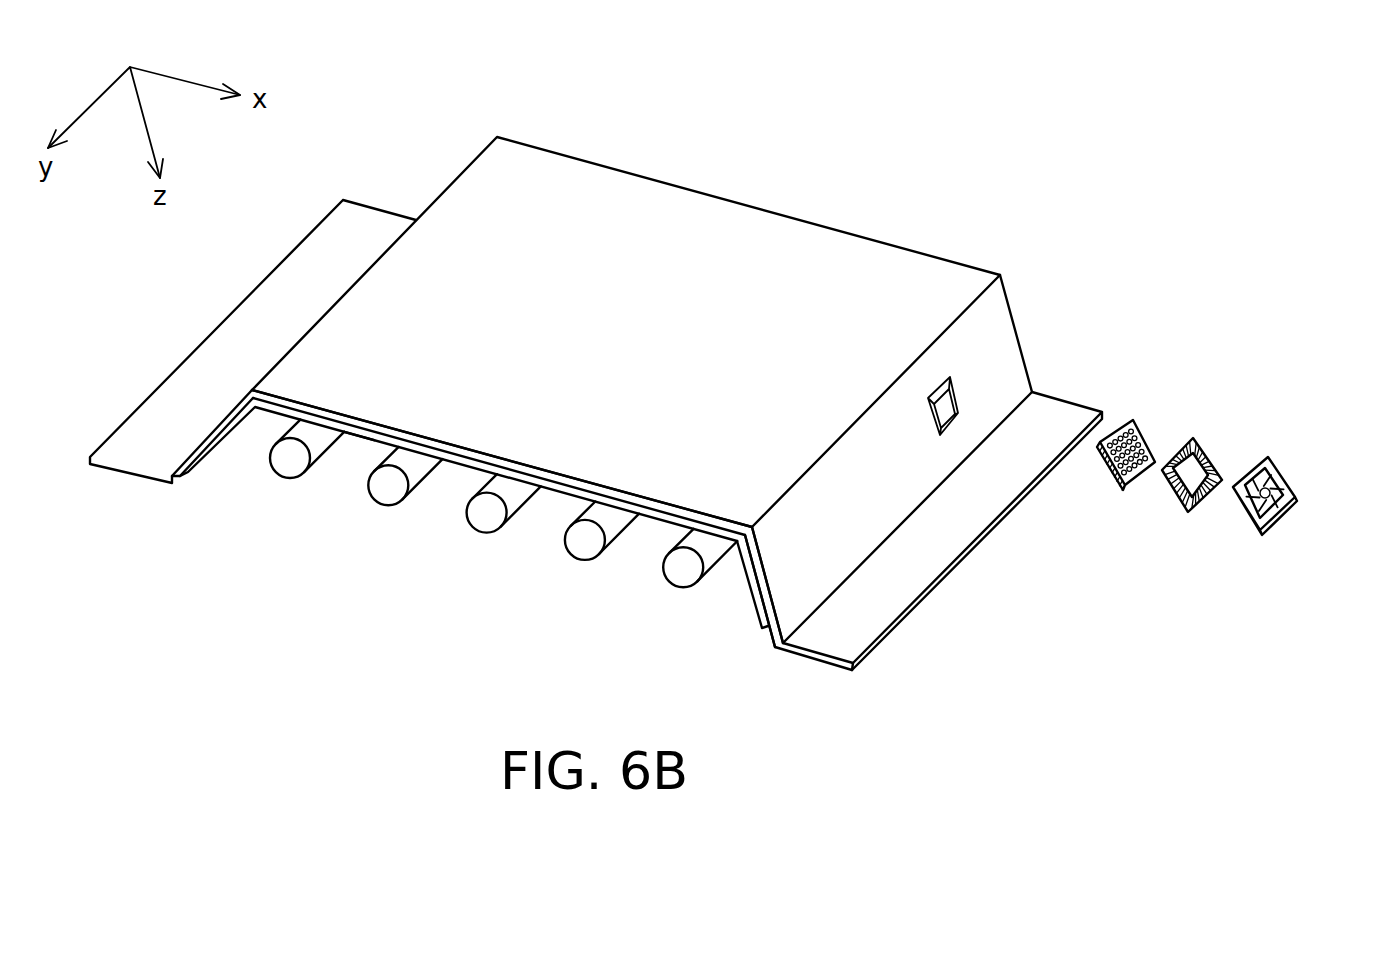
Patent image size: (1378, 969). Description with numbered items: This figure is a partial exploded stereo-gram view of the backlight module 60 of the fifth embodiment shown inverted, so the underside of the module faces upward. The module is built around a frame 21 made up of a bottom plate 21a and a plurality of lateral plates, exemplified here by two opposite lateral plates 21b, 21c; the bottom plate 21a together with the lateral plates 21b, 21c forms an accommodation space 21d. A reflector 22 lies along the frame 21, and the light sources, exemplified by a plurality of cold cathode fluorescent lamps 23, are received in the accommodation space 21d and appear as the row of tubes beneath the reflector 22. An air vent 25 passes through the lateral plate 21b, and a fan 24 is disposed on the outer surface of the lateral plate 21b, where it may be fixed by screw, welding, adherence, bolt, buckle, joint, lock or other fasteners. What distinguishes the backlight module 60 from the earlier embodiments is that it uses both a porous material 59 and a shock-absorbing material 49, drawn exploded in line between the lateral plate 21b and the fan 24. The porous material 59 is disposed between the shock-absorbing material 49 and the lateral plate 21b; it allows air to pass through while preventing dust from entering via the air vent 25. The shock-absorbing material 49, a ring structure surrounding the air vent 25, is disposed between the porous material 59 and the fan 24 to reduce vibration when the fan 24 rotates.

The backlight module 60 is at (1188, 124).
The frame 21 is at (960, 581).
The bottom plate 21a is at (486, 452).
The lateral plate 21b is at (762, 587).
The lateral plate 21c is at (203, 440).
The accommodation space 21d is at (345, 480).
The reflector 22 is at (455, 457).
The cold cathode fluorescent lamps 23 is at (388, 490).
The fan 24 is at (1303, 479).
The air vent 25 is at (972, 405).
The shock-absorbing material 49 is at (1205, 505).
The porous material 59 is at (1127, 490).